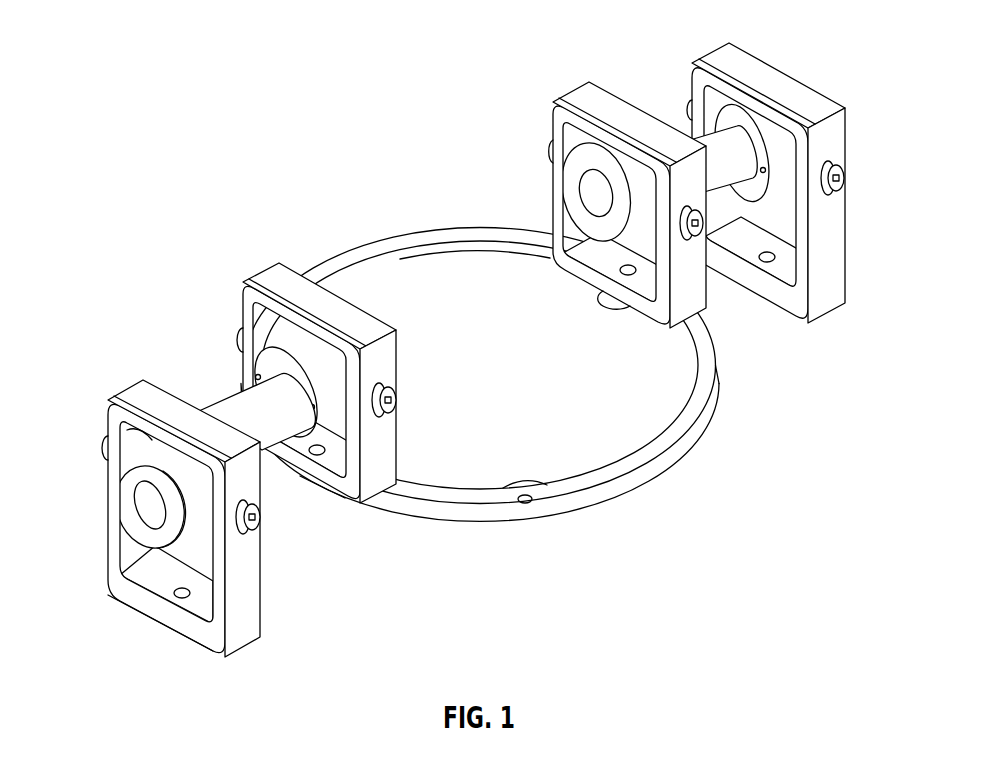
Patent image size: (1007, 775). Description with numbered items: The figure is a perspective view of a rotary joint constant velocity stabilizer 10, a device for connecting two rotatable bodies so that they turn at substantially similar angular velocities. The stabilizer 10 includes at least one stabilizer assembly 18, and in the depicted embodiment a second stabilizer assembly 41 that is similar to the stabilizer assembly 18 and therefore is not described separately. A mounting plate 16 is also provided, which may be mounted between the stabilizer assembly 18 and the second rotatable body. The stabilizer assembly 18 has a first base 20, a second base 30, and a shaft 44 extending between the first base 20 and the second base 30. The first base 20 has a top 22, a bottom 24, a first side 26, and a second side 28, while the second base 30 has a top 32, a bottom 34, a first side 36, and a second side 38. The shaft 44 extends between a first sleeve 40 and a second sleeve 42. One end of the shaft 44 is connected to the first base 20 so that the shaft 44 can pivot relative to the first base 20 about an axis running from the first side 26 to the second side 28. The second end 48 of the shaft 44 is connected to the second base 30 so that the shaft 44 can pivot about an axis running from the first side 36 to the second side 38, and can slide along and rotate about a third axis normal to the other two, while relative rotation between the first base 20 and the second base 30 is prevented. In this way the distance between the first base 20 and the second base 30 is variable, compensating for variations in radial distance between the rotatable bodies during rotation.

The rotary joint constant velocity stabilizer 10 is at (443, 345).
The mounting plate 16 is at (660, 473).
The stabilizer assembly 18 is at (248, 473).
The first base 20 is at (397, 447).
The top 22 is at (355, 303).
The bottom 24 is at (328, 497).
The first side 26 is at (398, 368).
The second side 28 is at (316, 395).
The second base 30 is at (181, 522).
The top 32 is at (160, 386).
The bottom 34 is at (157, 622).
The first side 36 is at (262, 605).
The second side 38 is at (118, 493).
The first sleeve 40 is at (240, 355).
The second stabilizer assembly 41 is at (624, 36).
The second sleeve 42 is at (120, 472).
The shaft 44 is at (290, 452).
The second end 48 is at (135, 503).